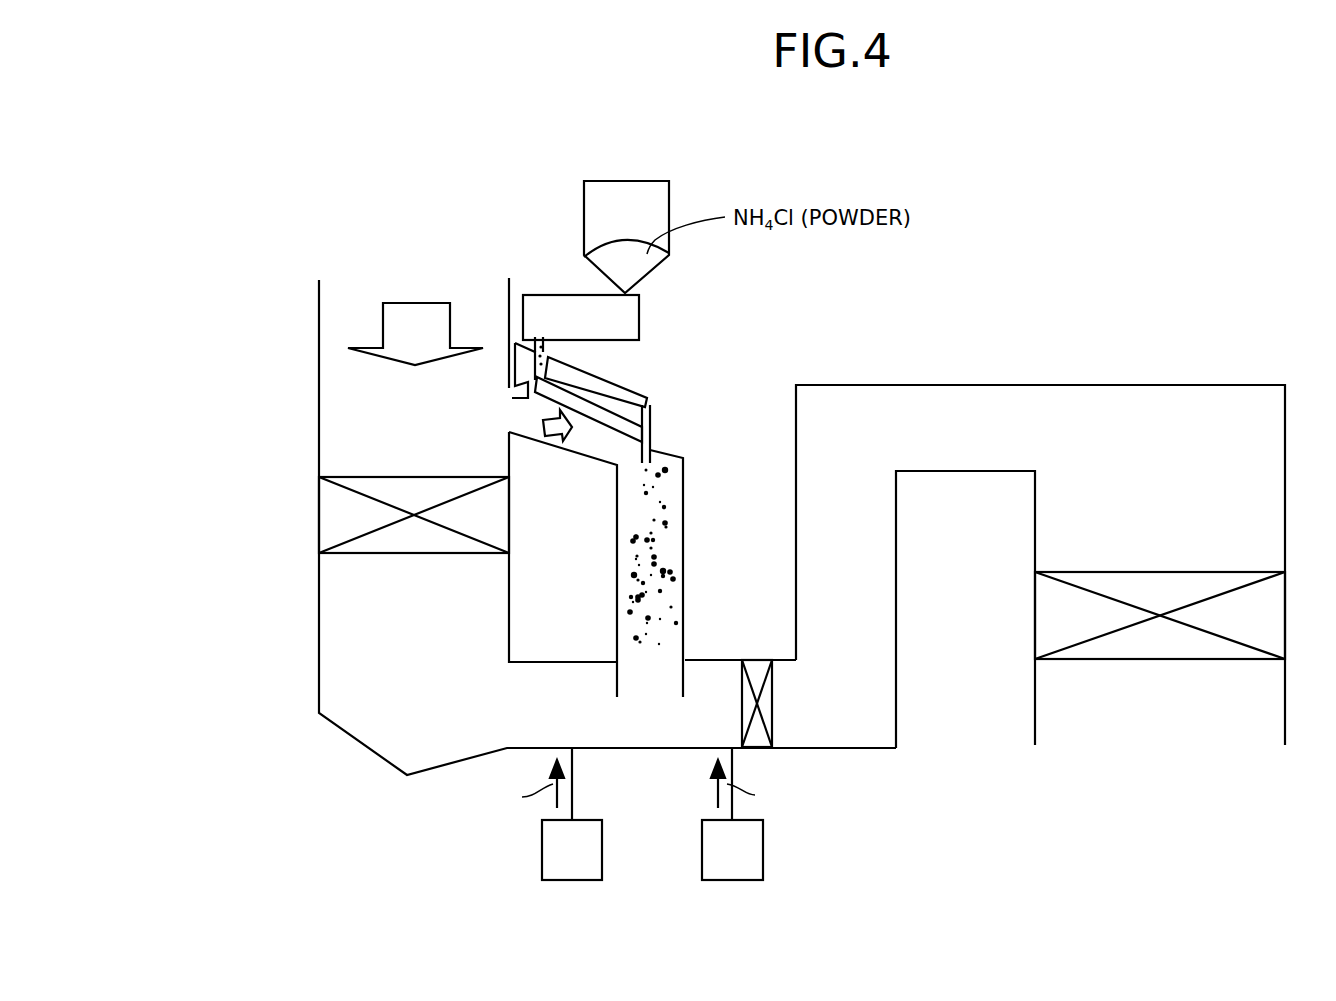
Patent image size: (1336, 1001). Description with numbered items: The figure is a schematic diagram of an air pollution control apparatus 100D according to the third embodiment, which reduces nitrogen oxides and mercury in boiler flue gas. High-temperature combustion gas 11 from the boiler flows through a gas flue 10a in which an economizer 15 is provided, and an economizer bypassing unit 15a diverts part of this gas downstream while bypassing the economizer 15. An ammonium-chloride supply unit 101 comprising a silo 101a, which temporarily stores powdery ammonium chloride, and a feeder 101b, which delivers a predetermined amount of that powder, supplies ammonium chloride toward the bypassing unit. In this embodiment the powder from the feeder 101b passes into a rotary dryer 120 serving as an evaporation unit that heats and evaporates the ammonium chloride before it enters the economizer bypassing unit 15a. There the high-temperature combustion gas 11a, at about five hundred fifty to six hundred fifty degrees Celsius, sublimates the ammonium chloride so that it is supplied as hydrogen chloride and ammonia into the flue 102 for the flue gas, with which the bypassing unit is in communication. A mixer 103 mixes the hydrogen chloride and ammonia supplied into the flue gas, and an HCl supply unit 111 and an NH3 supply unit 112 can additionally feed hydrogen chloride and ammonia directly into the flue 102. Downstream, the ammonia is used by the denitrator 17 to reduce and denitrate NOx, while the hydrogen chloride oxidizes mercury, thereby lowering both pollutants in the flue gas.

The air pollution control apparatus 100D is at (1110, 205).
The combustion gas 11 is at (383, 323).
The high-temperature combustion gas 11a is at (553, 441).
The gas flue 10a is at (510, 291).
The economizer 15 is at (320, 503).
The economizer bypassing unit 15a is at (683, 625).
The denitrator 17 is at (1035, 652).
The ammonium-chloride supply unit 101 is at (677, 260).
The silo 101a is at (668, 255).
The feeder 101b is at (639, 316).
The flue 102 is at (367, 750).
The mixer 103 is at (747, 660).
The HCl supply unit 111 is at (542, 857).
The NH3 supply unit 112 is at (763, 852).
The rotary dryer 120 is at (597, 372).